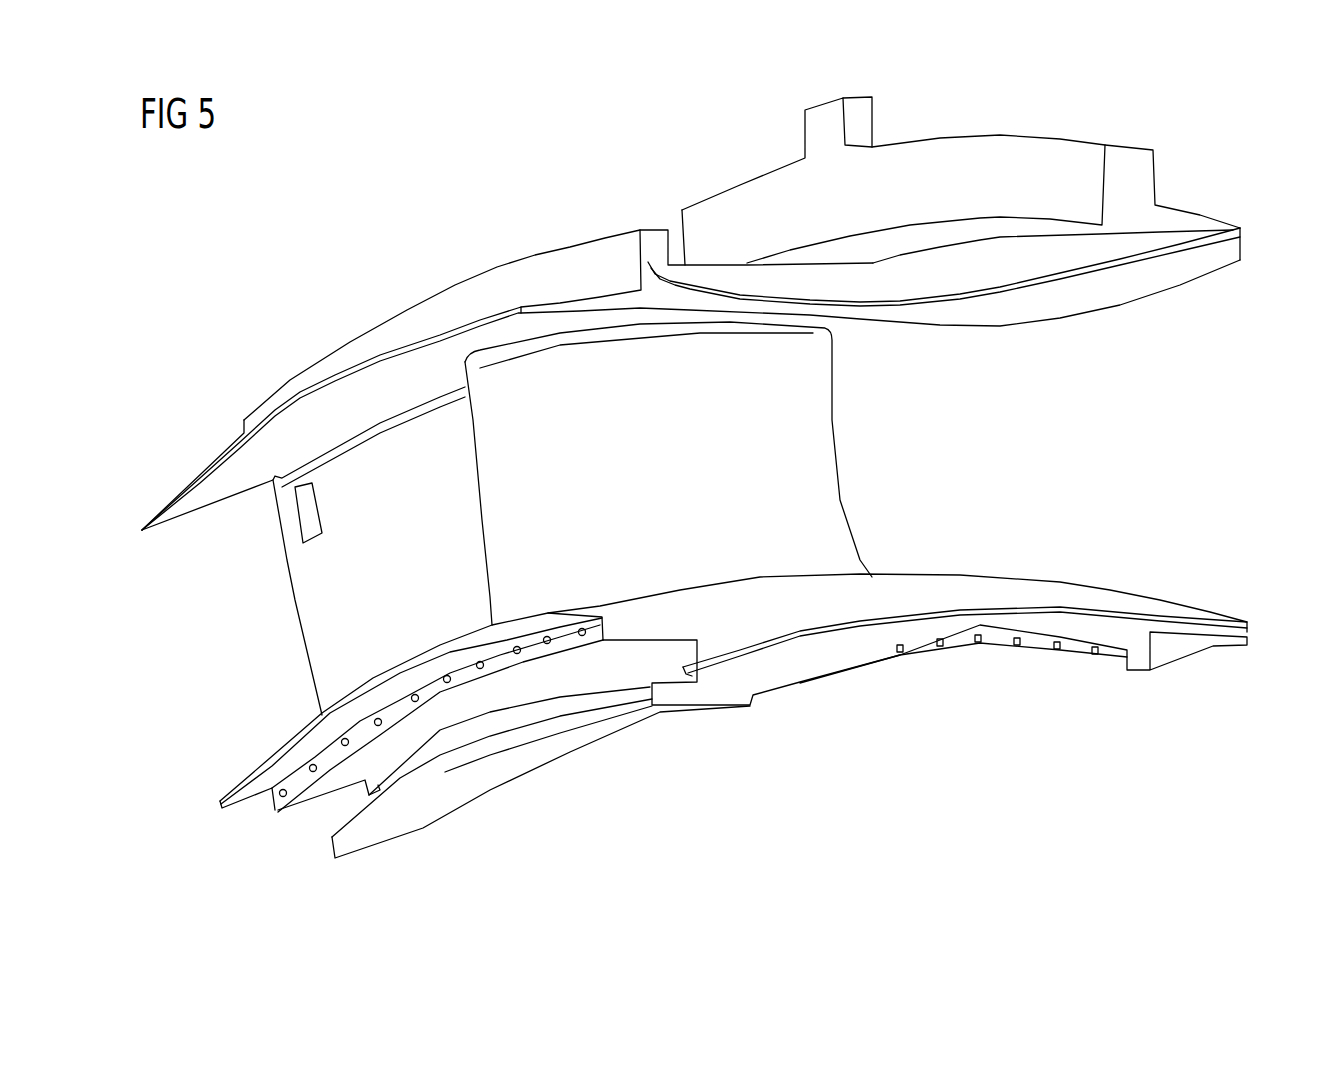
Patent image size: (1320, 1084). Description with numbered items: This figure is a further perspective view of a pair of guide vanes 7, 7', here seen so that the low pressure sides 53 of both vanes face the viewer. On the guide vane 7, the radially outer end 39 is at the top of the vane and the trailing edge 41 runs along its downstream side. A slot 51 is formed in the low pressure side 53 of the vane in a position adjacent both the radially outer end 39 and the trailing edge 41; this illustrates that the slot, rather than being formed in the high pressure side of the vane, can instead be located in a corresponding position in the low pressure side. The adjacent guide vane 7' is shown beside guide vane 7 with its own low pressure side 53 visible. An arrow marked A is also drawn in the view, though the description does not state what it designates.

The guide vane 7 is at (692, 716).
The guide vane 7' is at (965, 531).
The radially outer end 39 is at (362, 437).
The trailing edge 41 is at (302, 640).
The slot 51 is at (305, 517).
The low pressure side 53 is at (442, 616).
The flow direction A is at (960, 452).